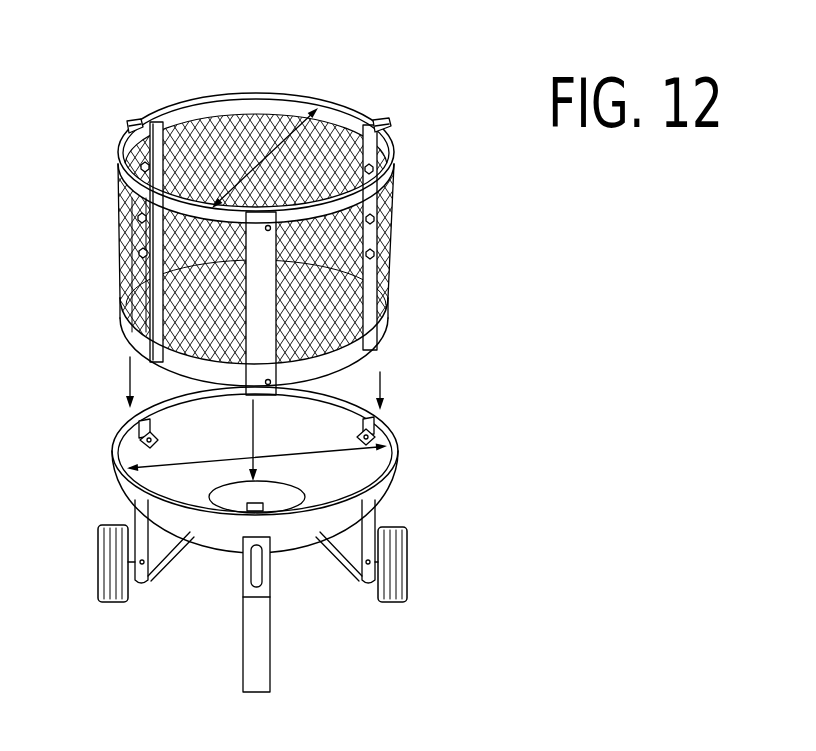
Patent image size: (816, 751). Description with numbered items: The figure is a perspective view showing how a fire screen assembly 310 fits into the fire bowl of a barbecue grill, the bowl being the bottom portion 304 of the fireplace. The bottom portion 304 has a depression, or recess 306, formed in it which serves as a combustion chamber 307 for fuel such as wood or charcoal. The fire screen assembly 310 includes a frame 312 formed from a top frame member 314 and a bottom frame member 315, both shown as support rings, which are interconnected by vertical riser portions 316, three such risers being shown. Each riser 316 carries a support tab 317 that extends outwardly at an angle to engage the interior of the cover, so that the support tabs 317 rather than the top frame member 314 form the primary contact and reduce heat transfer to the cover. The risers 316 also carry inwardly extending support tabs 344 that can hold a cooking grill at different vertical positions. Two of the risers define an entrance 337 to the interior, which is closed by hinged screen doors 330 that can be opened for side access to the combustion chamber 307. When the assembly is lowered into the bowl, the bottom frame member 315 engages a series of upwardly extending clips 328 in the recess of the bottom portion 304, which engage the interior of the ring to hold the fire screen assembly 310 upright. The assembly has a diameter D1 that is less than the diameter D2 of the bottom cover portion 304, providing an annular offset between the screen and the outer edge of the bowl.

The fire screen assembly 310 is at (433, 152).
The frame 312 is at (199, 83).
The top frame member 314 is at (262, 102).
The combustion chamber 307 is at (333, 140).
The vertical riser portion 316 is at (375, 232).
The support tab 317 is at (140, 118).
The screen door 330 is at (143, 232).
The support tab 344 is at (378, 251).
The entrance 337 is at (98, 302).
The bottom frame member 315 is at (372, 366).
The clip 328 is at (138, 437).
The recess 306 is at (358, 470).
The bottom portion 304 is at (386, 502).
The diameter of fire screen assembly D1 is at (283, 128).
The diameter of bottom cover portion D2 is at (322, 450).